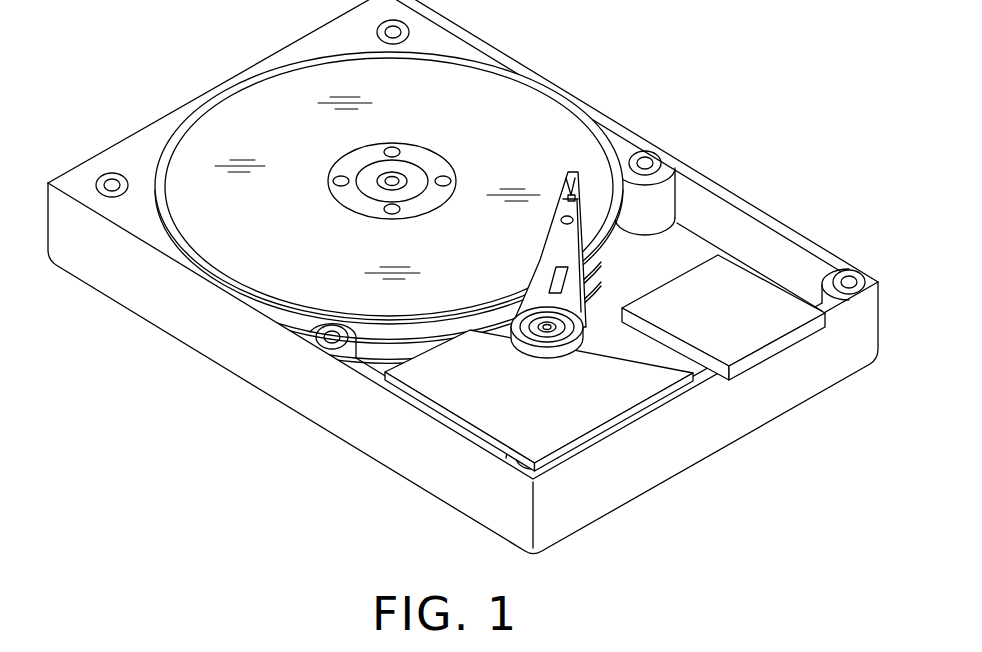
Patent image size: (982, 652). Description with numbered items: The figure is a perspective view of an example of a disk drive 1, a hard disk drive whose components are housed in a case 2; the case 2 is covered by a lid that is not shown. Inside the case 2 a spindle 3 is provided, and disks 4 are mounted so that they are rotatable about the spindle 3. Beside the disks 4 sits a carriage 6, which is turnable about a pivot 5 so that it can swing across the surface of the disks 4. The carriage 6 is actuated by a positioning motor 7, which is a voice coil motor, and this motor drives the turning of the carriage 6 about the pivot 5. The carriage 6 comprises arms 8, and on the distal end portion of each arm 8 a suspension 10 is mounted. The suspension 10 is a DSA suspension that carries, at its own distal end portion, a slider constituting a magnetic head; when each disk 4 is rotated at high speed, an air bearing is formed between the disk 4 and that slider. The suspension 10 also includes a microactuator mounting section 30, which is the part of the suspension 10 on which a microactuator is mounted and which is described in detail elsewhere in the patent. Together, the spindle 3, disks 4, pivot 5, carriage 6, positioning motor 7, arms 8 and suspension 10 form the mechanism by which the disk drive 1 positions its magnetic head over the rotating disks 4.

The disk drive 1 is at (767, 78).
The case 2 is at (253, 371).
The spindle 3 is at (406, 168).
The disks 4 is at (507, 108).
The pivot 5 is at (564, 342).
The carriage 6 is at (568, 305).
The positioning motor 7 is at (470, 410).
The arm 8 is at (573, 240).
The suspension 10 is at (570, 172).
The microactuator mounting section 30 is at (557, 206).